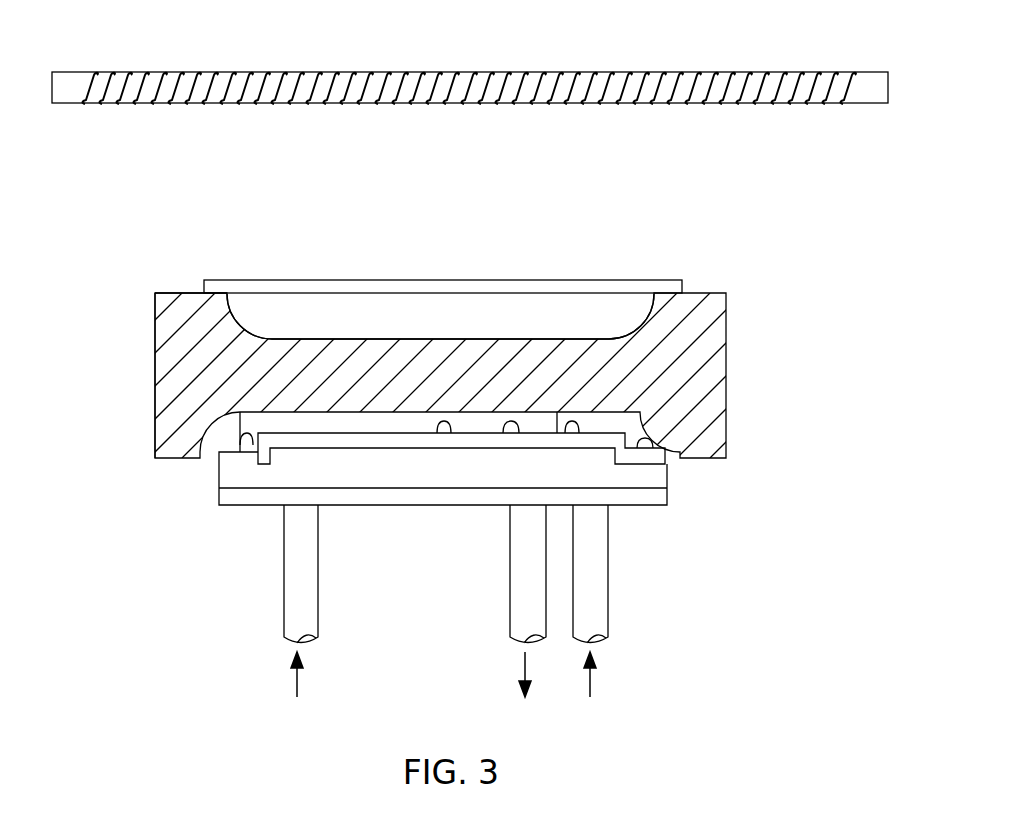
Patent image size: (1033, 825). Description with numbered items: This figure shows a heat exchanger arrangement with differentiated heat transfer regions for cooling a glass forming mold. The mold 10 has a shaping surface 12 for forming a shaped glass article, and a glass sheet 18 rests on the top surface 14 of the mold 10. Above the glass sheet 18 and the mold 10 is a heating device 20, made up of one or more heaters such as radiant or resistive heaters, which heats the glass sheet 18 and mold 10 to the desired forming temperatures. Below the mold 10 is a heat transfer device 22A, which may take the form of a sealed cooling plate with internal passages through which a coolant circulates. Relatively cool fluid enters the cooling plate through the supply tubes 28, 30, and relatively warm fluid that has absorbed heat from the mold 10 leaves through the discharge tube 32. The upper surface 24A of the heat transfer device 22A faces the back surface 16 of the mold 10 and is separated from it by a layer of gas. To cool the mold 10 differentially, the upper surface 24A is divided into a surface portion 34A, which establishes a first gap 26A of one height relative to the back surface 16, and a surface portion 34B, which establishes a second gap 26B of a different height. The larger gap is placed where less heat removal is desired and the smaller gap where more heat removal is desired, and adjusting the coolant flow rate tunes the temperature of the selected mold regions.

The mold 10 is at (726, 345).
The shaping surface 12 is at (590, 338).
The top surface 14 is at (180, 290).
The back surface 16 is at (398, 413).
The glass sheet 18 is at (413, 278).
The heating device 20 is at (515, 70).
The heat transfer device 22A is at (222, 468).
The upper surface 24A is at (451, 433).
The gap 26A is at (579, 433).
The gap 26B is at (253, 445).
The supply tube 28 is at (318, 595).
The supply tube 30 is at (608, 587).
The discharge tube 32 is at (510, 615).
The surface portion 34A is at (519, 433).
The surface portion 34B is at (653, 448).